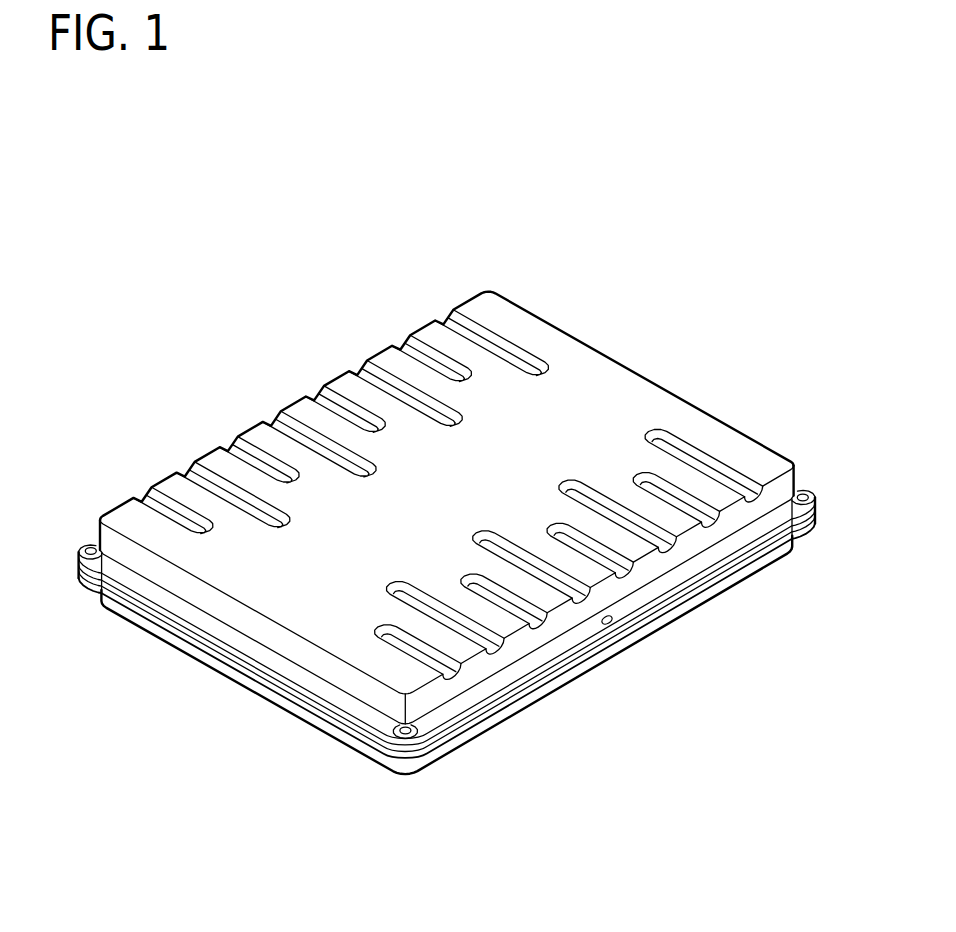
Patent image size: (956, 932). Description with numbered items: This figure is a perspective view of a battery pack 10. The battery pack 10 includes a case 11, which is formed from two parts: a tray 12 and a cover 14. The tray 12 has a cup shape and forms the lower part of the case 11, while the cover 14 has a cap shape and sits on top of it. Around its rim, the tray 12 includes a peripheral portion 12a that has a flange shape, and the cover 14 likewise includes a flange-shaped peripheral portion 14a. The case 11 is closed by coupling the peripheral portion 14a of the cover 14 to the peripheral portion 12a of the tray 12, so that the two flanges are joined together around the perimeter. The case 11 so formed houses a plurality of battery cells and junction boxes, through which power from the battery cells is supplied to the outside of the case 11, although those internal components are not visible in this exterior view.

The battery pack 10 is at (167, 214).
The case 11 is at (838, 275).
The tray 12 is at (705, 613).
The peripheral portion 12a is at (78, 574).
The cover 14 is at (648, 417).
The peripheral portion 14a is at (92, 540).